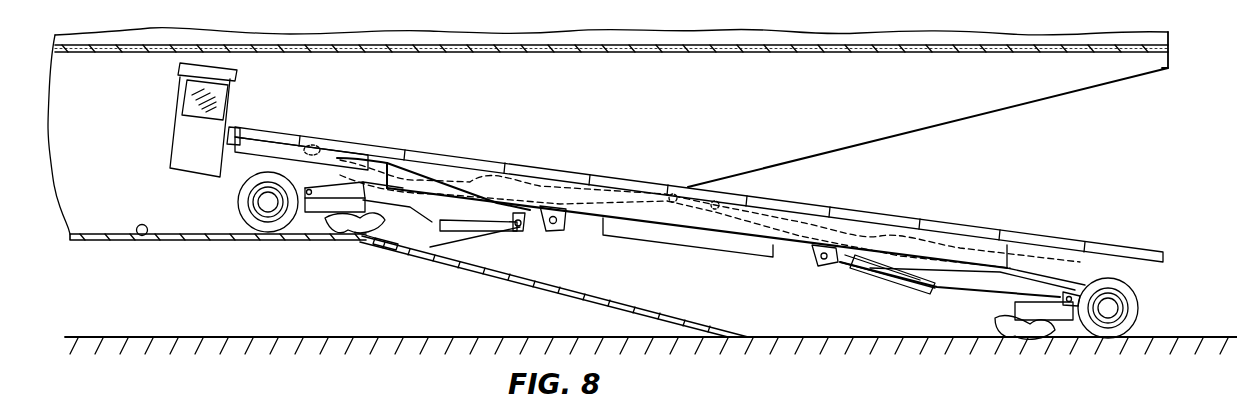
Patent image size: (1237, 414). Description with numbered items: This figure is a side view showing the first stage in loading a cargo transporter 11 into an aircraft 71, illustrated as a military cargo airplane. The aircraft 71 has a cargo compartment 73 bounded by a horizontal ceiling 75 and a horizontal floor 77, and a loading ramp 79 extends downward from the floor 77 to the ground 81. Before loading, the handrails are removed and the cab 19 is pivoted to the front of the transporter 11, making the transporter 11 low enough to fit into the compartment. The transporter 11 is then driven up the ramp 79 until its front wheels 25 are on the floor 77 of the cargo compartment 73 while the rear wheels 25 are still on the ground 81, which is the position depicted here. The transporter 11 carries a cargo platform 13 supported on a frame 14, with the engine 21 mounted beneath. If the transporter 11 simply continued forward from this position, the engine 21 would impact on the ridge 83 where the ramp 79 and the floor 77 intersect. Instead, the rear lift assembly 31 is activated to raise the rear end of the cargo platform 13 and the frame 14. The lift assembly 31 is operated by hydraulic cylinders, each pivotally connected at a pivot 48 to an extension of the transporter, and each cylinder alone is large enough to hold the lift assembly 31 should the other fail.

The cargo transporter 11 is at (699, 177).
The cargo platform 13 is at (803, 207).
The frame 14 is at (689, 220).
The cab 19 is at (203, 168).
The engine 21 is at (662, 236).
The wheels 25 is at (261, 226).
The rear lift assembly 31 is at (946, 297).
The pivotal connection 48 is at (861, 265).
The aircraft 71 is at (470, 53).
The cargo compartment 73 is at (1010, 108).
The ceiling 75 is at (390, 53).
The floor 77 is at (144, 243).
The loading ramp 79 is at (526, 283).
The ground 81 is at (861, 342).
The ridge 83 is at (385, 256).